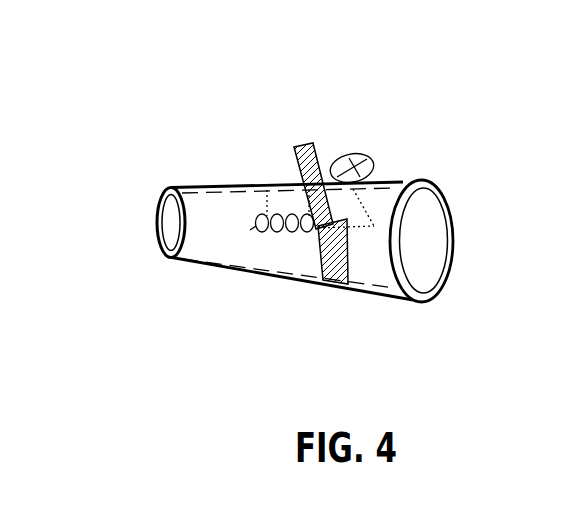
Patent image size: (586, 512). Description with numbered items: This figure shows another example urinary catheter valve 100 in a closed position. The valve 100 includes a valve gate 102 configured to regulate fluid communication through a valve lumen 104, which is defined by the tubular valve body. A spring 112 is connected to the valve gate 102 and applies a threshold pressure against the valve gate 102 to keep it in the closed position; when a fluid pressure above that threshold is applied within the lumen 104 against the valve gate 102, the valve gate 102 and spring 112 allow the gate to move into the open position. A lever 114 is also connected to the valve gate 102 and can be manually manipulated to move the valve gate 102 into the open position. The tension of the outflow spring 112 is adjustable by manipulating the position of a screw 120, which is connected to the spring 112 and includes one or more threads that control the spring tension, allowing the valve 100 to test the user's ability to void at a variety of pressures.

The valve 100 is at (282, 187).
The valve gate 102 is at (319, 258).
The valve lumen 104 is at (150, 225).
The spring 112 is at (254, 229).
The lever 114 is at (305, 143).
The screw 120 is at (384, 150).